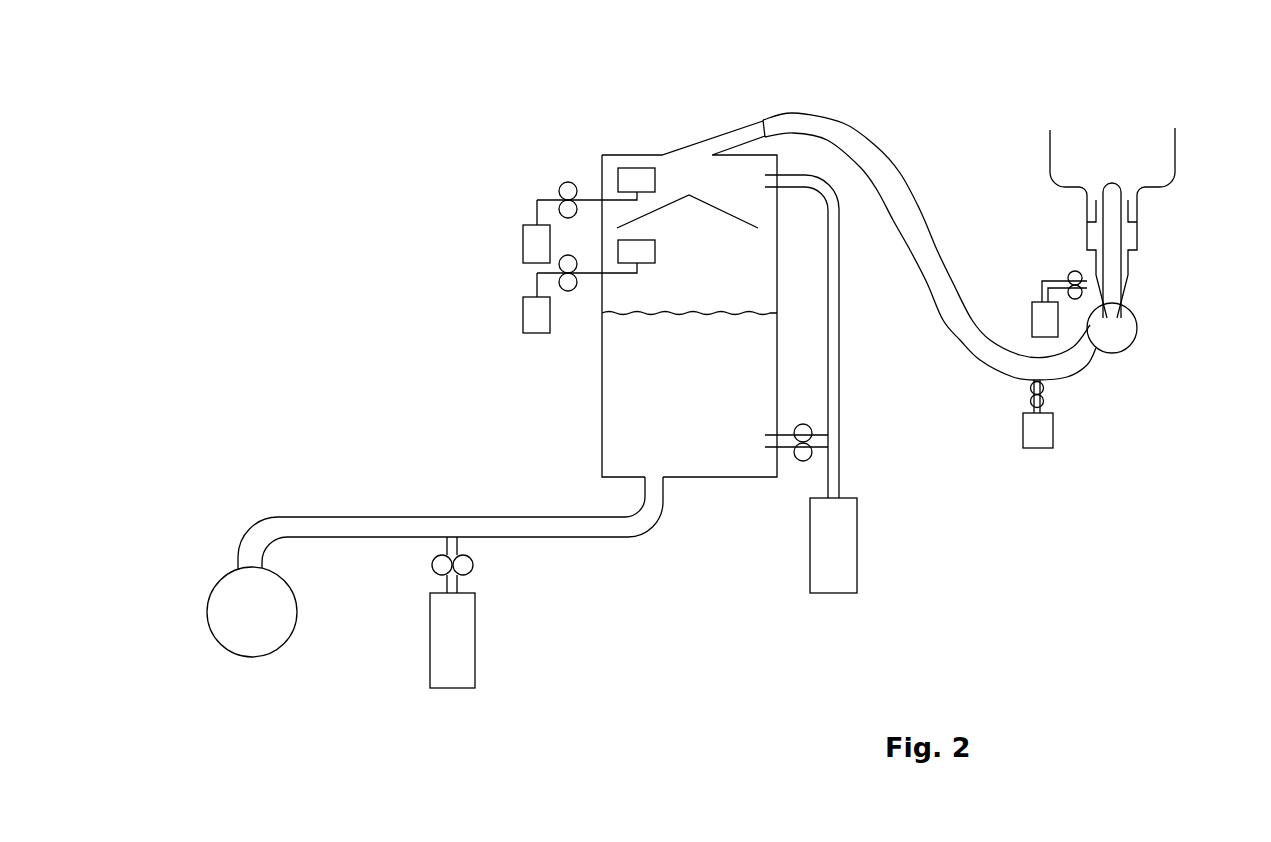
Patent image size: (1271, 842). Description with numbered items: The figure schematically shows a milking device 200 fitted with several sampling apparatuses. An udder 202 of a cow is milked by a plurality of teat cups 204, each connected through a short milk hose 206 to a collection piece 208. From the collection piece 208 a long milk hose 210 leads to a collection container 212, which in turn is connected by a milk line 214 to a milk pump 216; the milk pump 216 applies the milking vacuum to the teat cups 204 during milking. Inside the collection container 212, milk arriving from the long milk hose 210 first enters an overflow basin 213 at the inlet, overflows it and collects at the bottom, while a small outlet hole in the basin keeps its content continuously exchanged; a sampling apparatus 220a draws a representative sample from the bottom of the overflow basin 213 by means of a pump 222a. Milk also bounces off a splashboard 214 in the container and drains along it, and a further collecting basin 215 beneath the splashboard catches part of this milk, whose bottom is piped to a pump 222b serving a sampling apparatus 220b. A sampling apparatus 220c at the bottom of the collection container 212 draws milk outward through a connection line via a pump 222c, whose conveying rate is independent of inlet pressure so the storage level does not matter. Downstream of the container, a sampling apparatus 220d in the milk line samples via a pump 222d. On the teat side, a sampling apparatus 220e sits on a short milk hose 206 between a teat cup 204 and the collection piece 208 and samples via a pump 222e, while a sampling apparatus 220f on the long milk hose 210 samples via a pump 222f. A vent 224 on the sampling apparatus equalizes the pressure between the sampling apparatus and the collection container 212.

The milking device 200 is at (283, 126).
The udder 202 is at (1177, 148).
The teat cup 204 is at (1144, 238).
The short milk hose 206 is at (1138, 300).
The collection piece 208 is at (1137, 330).
The long milk hose 210 is at (1075, 378).
The collection container 212 is at (688, 500).
The overflow basin 213 is at (633, 168).
The milk line / splashboard 214 is at (712, 216).
The further collecting basin 215 is at (650, 264).
The milk pump 216 is at (207, 612).
The sampling apparatus 220a is at (520, 198).
The sampling apparatus 220b is at (520, 296).
The sampling apparatus 220c is at (868, 532).
The sampling apparatus 220d is at (490, 684).
The sampling apparatus 220e is at (1028, 296).
The sampling apparatus 220f is at (1060, 440).
The pump 222a is at (568, 182).
The pump 222b is at (570, 292).
The pump 222c is at (800, 461).
The pump 222d is at (432, 565).
The pump 222e is at (1068, 278).
The pump 222f is at (1030, 395).
The vent 224 is at (845, 312).